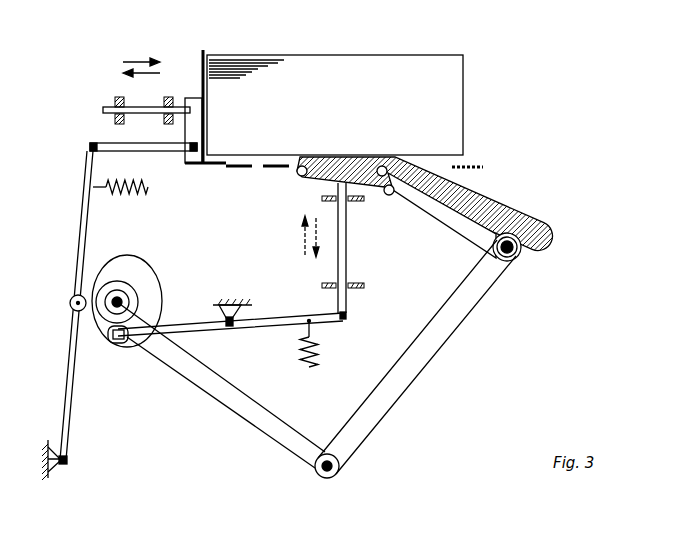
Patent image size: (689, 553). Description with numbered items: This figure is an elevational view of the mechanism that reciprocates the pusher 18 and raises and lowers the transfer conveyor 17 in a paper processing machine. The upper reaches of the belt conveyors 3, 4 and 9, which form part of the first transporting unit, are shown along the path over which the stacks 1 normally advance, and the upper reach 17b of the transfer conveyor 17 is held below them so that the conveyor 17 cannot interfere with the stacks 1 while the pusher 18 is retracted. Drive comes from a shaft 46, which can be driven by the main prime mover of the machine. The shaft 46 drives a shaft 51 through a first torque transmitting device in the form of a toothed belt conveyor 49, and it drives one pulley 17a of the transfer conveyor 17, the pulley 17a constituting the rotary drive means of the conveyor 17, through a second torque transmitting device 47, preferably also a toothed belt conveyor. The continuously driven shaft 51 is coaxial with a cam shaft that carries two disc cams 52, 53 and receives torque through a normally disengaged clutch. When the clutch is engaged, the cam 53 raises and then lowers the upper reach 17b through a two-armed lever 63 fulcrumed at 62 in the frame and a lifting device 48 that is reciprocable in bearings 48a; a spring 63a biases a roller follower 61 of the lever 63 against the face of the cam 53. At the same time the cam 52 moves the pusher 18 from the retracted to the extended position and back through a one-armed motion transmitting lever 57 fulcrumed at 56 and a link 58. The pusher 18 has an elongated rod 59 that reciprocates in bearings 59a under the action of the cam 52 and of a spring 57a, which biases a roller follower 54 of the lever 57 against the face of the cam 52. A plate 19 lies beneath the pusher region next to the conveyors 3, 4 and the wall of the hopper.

The stack 1 is at (358, 65).
The belt conveyor 3 is at (235, 169).
The belt conveyor 4 is at (277, 169).
The belt conveyor 9 is at (478, 166).
The transfer conveyor 17 is at (500, 199).
The pulley 17a is at (301, 166).
The upper reach 17b is at (345, 172).
The pusher 18 is at (202, 60).
The bottom plate 19 is at (206, 166).
The shaft 46 is at (328, 477).
The second torque transmitting device 47 is at (437, 335).
The lifting device 48 is at (347, 252).
The bearings 48a is at (366, 287).
The toothed belt conveyor 49 is at (216, 393).
The shaft 51 is at (139, 288).
The disc cam 52 is at (118, 266).
The disc cam 53 is at (137, 294).
The roller follower 54 is at (74, 297).
The fulcrum 56 is at (53, 468).
The one-armed motion transmitting lever 57 is at (71, 373).
The spring 57a is at (139, 182).
The link 58 is at (99, 142).
The elongated rod 59 is at (129, 106).
The bearings 59a is at (117, 96).
The roller follower 61 is at (119, 345).
The fulcrum 62 is at (233, 305).
The two-armed lever 63 is at (261, 324).
The spring 63a is at (323, 353).